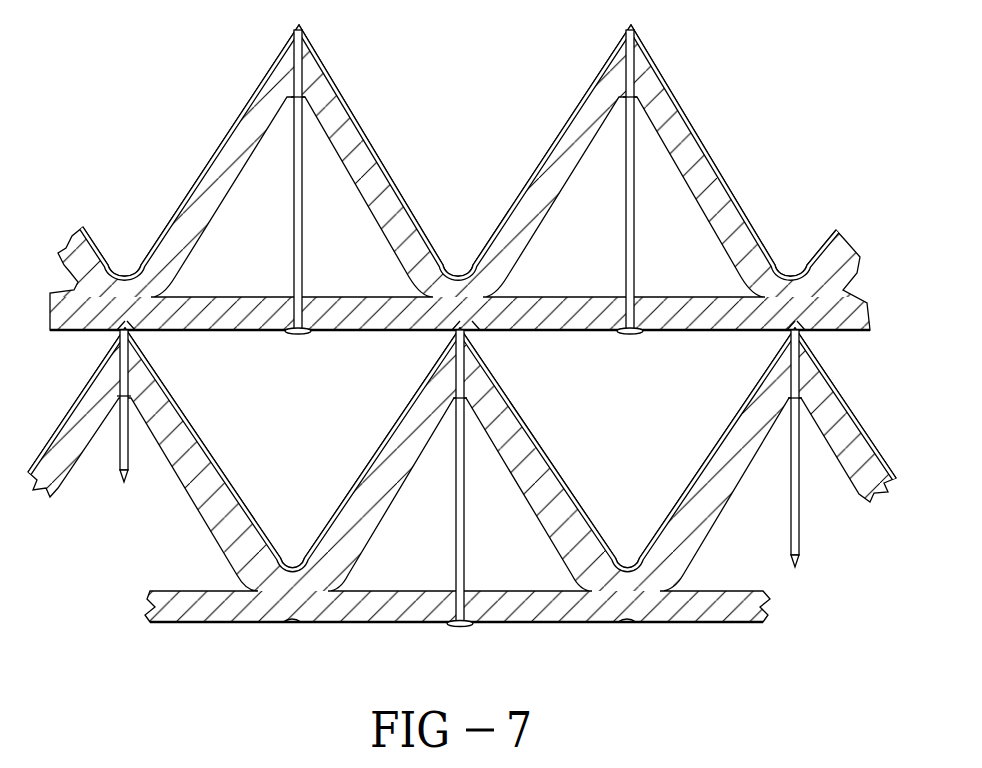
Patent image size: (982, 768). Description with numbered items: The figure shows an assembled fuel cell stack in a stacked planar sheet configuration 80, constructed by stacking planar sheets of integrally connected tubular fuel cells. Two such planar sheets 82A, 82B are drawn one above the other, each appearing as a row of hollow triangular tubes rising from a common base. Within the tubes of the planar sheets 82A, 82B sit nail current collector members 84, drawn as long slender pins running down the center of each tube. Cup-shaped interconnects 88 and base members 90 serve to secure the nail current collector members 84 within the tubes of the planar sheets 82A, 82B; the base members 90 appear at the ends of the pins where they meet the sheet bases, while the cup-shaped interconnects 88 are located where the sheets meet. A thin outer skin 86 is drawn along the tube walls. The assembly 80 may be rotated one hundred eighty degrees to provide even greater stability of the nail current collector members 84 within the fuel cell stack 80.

The stacked planar sheet configuration 80 is at (462, 354).
The planar sheet 82A is at (175, 145).
The planar sheet 82B is at (176, 531).
The nail current collector member 84 is at (302, 200).
The face skin 86 is at (350, 100).
The cup-shaped interconnect 88 is at (461, 328).
The base member 90 is at (296, 334).